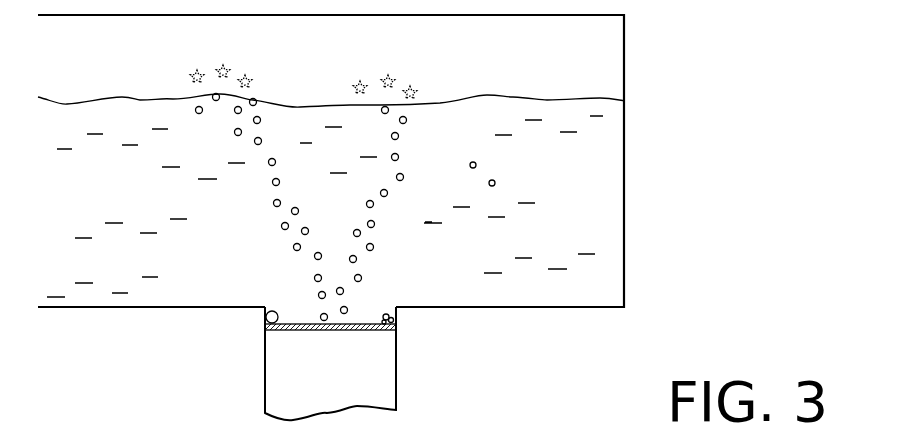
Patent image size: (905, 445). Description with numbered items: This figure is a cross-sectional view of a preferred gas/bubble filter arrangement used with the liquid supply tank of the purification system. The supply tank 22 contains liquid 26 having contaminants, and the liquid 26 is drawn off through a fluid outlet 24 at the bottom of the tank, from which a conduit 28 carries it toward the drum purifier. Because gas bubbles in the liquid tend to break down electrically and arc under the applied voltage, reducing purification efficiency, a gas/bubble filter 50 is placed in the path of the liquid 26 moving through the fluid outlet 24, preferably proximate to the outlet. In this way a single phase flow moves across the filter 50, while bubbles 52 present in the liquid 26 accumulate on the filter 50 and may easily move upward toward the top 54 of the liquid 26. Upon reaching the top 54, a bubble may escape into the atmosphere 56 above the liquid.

The supply tank 22 is at (625, 186).
The fluid outlet 24 is at (292, 296).
The liquid 26 is at (605, 148).
The conduit 28 is at (396, 392).
The gas/bubble filter 50 is at (374, 331).
The bubbles 52 is at (494, 180).
The top of liquid 54 is at (122, 85).
The atmosphere 56 is at (243, 76).